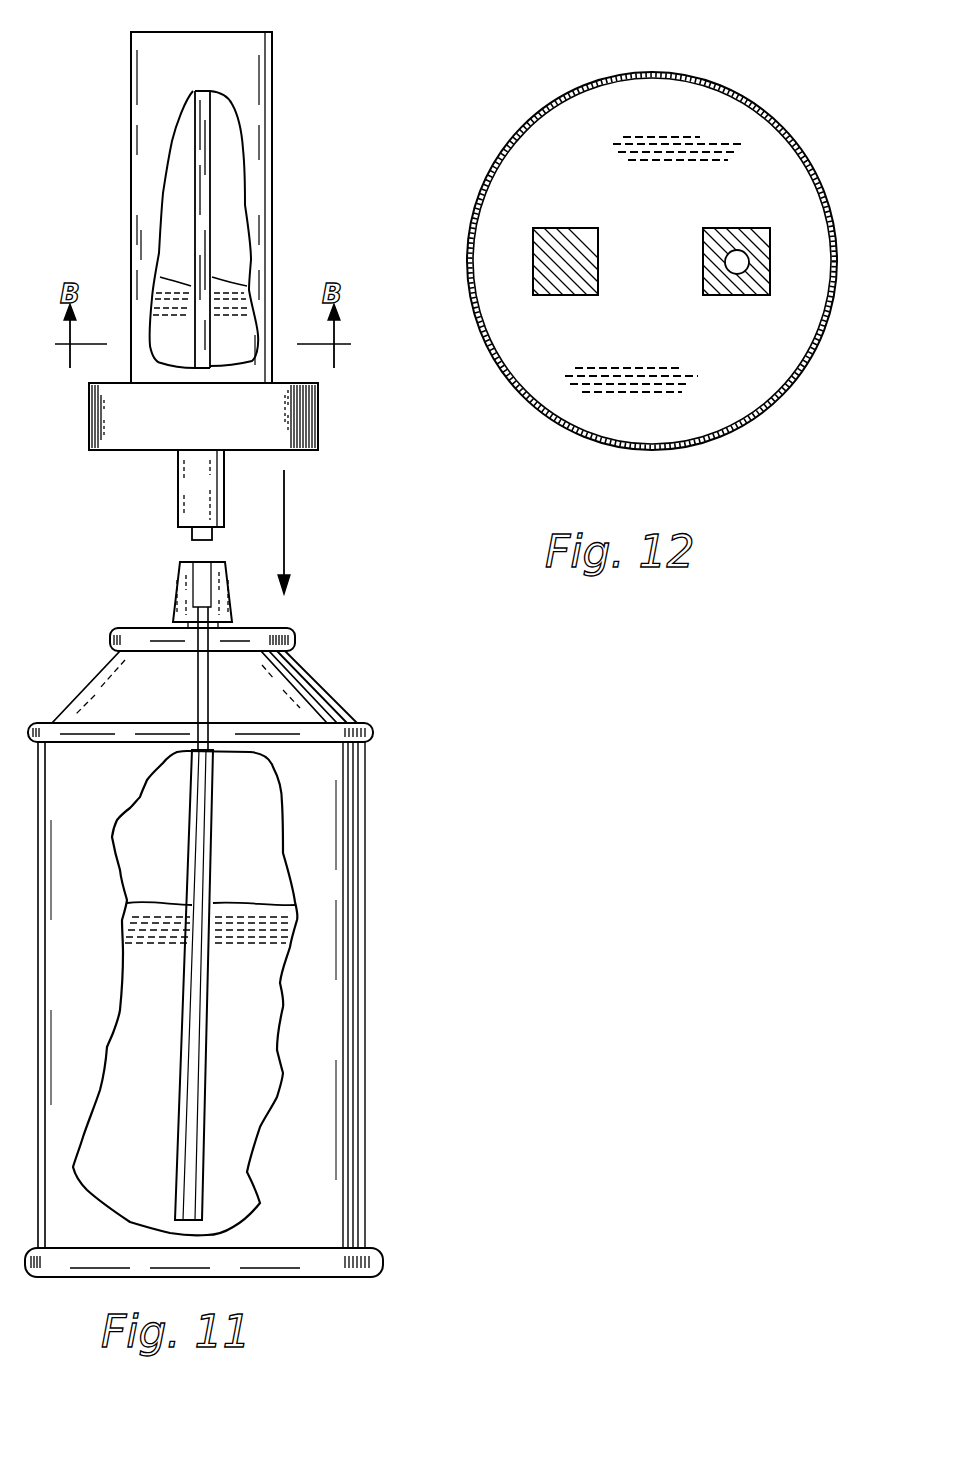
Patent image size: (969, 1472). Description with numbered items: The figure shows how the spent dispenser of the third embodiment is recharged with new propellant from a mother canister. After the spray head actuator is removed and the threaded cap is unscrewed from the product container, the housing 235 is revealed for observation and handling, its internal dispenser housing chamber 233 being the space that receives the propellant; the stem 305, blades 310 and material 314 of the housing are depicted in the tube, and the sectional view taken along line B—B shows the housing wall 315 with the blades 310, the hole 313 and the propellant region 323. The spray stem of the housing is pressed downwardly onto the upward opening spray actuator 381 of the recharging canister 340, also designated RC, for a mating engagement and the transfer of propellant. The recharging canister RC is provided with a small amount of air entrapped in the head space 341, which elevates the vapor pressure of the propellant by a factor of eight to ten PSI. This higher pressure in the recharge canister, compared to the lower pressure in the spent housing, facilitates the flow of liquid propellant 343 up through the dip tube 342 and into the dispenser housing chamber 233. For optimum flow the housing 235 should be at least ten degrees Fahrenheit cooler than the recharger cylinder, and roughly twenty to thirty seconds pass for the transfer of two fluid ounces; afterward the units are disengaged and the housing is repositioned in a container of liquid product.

In FIG. 11, the dispenser housing chamber 233 is at (272, 63).
In FIG. 11, the housing 235 is at (219, 274).
In FIG. 11, the blade legs 310 is at (191, 179).
In FIG. 12, the blade legs 310 is at (575, 228).
In FIG. 11, the frozen material with liquid 314 is at (221, 288).
In FIG. 11, the stem 305 is at (190, 497).
In FIG. 11, the upward opening spray actuator 381 is at (177, 593).
In FIG. 11, the recharging canister 340 is at (367, 910).
In FIG. 11, the head space 341 is at (263, 838).
In FIG. 11, the dip tube 342 is at (210, 1032).
In FIG. 11, the liquid level 343 is at (263, 938).
In FIG. 11, the recharging canister RC is at (418, 1177).
In FIG. 12, the tube wall 315 is at (677, 72).
In FIG. 12, the liquid region 323 is at (713, 135).
In FIG. 12, the hole 313 is at (735, 250).